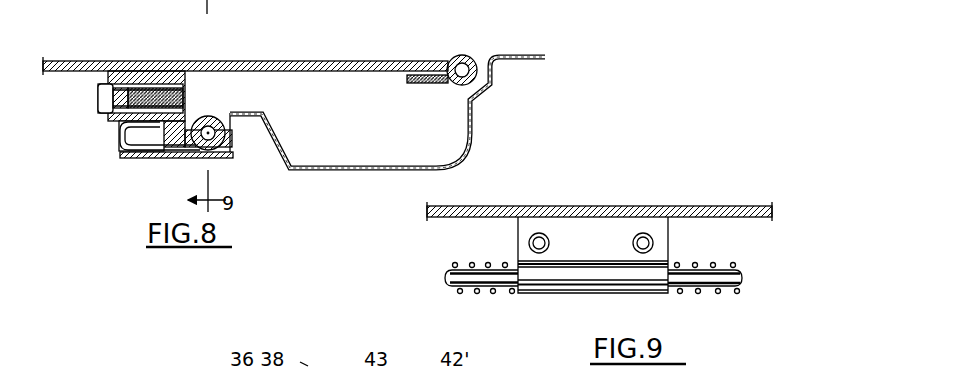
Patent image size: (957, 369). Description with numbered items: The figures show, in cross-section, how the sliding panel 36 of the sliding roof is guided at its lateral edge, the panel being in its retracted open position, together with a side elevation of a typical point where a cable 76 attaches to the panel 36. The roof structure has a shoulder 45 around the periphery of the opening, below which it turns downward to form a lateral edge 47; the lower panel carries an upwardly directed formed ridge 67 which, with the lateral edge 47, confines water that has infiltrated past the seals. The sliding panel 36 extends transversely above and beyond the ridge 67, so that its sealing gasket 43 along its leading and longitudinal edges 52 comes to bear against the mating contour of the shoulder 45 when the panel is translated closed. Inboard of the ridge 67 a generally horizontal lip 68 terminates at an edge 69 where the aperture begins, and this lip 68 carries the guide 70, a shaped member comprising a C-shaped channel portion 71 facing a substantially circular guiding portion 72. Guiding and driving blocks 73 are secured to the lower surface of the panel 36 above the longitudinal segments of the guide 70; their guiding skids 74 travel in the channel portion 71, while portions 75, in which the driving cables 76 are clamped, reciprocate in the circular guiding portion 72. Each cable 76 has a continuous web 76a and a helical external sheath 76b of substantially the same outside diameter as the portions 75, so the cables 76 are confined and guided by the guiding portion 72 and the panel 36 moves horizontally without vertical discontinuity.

In FIG. 8, the sliding panel 36 is at (230, 61).
In FIG. 9, the sliding panel 36 is at (611, 203).
In FIG. 8, the sealing gasket 43 is at (463, 55).
In FIG. 8, the shoulder 45 is at (491, 84).
In FIG. 8, the lateral edge 47 is at (468, 127).
In FIG. 8, the leading and longitudinal edges 52 is at (445, 60).
In FIG. 8, the formed ridge 67 is at (283, 143).
In FIG. 8, the horizontal lip 68 is at (156, 152).
In FIG. 8, the edge 69 is at (109, 155).
In FIG. 8, the guide 70 is at (140, 150).
In FIG. 8, the C-shaped channel portion 71 is at (122, 135).
In FIG. 8, the circular guiding portion 72 is at (208, 120).
In FIG. 9, the guiding and driving block 73 is at (659, 245).
In FIG. 8, the guiding skid 74 is at (130, 125).
In FIG. 8, the cable-clamping portion 75 is at (230, 152).
In FIG. 9, the driving cable 76 is at (715, 292).
In FIG. 9, the continuous web 76a is at (475, 285).
In FIG. 9, the helical external sheath 76b is at (470, 262).